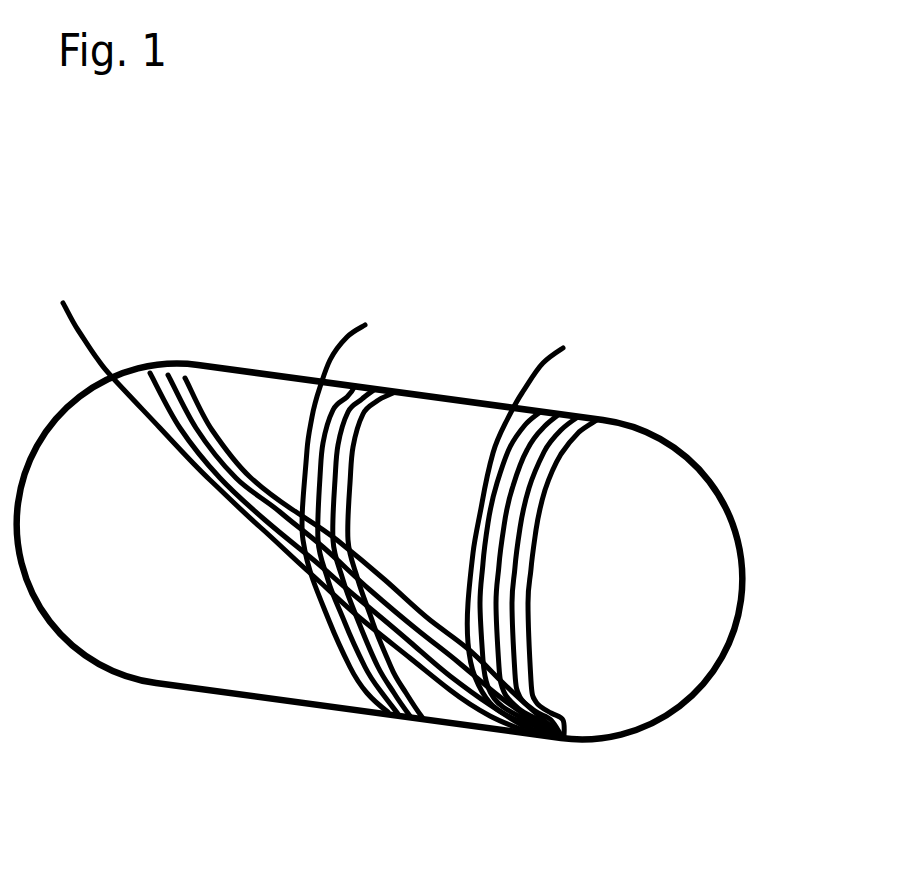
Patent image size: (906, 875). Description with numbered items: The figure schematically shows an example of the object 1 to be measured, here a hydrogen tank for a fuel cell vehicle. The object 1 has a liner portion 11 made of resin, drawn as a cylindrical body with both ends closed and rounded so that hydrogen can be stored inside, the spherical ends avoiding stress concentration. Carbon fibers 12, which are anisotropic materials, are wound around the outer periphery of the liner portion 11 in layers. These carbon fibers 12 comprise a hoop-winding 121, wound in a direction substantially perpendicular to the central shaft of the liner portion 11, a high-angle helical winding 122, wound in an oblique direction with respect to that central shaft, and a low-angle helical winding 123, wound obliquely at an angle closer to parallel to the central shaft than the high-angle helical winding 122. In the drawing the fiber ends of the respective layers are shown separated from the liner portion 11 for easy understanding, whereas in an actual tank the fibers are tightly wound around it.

The object 1 is at (608, 311).
The liner portion 11 is at (727, 508).
The carbon fibers 12 is at (405, 498).
The hoop-winding 121 is at (563, 472).
The high-angle helical winding 122 is at (367, 427).
The low-angle helical winding 123 is at (208, 408).